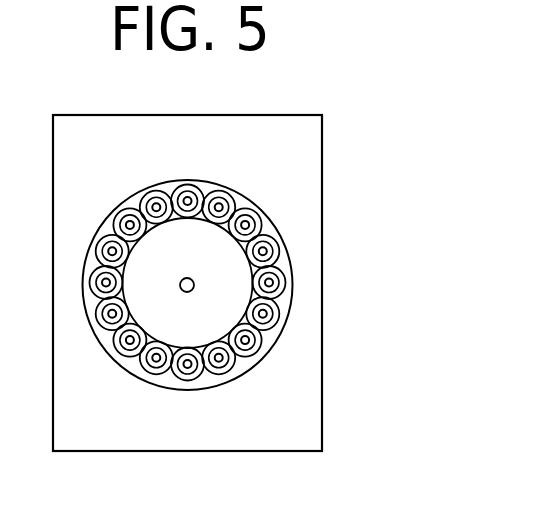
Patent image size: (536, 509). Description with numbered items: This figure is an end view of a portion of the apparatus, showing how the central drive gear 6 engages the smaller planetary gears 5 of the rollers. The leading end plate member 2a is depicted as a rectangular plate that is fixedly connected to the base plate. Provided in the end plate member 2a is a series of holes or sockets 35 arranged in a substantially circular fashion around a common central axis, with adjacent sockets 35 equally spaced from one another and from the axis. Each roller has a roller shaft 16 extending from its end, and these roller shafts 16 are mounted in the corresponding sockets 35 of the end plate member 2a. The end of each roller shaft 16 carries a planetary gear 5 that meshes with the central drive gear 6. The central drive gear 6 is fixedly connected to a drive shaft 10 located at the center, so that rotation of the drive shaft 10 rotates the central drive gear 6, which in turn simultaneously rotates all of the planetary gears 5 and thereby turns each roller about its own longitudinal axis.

The leading end plate member 2a is at (305, 390).
The planetary gear 5 is at (246, 209).
The central drive gear 6 is at (113, 233).
The drive shaft 10 is at (180, 286).
The roller shaft 16 is at (288, 278).
The hole or socket 35 is at (133, 210).